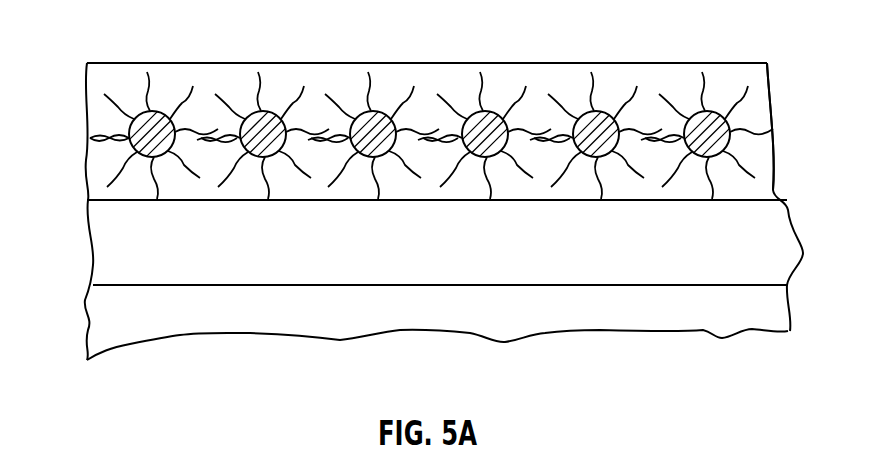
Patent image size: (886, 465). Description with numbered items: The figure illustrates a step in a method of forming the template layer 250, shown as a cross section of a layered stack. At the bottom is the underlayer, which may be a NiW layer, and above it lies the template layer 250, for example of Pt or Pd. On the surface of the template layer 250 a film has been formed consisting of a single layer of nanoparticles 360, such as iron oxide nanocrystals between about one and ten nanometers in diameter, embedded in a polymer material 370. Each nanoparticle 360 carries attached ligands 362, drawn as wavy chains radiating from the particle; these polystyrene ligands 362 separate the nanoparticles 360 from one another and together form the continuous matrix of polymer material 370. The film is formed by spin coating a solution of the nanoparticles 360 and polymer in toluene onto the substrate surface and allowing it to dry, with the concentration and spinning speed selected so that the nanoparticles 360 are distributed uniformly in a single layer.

The template layer 250 is at (113, 246).
The nanoparticles 360 is at (738, 45).
The ligands 362 is at (685, 45).
The polymer material 370 is at (768, 177).